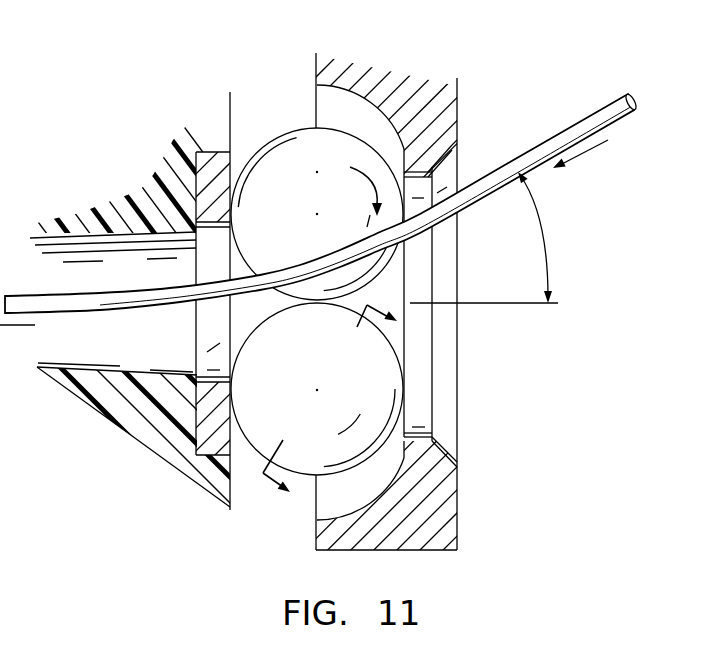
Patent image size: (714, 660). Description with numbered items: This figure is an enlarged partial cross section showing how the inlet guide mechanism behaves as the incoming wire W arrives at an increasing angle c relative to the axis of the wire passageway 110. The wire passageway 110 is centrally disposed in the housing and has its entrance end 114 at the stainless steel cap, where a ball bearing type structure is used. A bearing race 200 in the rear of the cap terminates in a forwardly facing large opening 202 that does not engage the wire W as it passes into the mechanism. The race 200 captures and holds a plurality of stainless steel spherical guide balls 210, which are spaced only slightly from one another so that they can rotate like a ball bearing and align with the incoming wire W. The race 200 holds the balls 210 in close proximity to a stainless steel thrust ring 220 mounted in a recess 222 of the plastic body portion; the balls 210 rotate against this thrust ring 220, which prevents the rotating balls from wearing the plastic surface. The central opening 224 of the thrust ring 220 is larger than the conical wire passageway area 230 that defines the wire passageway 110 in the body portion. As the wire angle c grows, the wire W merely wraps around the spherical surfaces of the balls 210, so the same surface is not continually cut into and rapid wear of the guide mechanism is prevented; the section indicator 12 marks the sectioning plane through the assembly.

The wire passageway 110 is at (93, 240).
The entrance end 114 is at (446, 395).
The bearing race 200 is at (457, 102).
The large opening 202 is at (420, 372).
The spherical guide balls 210 is at (327, 147).
The thrust ring 220 is at (224, 123).
The recess 222 is at (205, 415).
The central opening 224 is at (220, 343).
The conical wire passageway area 230 is at (58, 345).
The section line 12- 12 is at (326, 418).
The wire W is at (580, 128).
The bend angle c is at (548, 246).